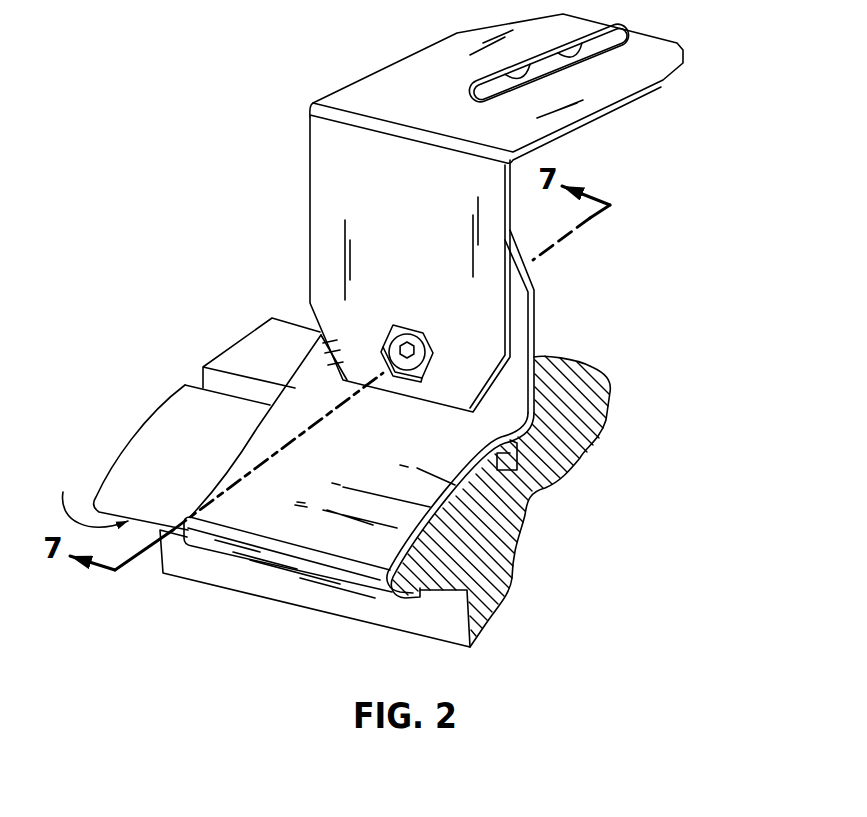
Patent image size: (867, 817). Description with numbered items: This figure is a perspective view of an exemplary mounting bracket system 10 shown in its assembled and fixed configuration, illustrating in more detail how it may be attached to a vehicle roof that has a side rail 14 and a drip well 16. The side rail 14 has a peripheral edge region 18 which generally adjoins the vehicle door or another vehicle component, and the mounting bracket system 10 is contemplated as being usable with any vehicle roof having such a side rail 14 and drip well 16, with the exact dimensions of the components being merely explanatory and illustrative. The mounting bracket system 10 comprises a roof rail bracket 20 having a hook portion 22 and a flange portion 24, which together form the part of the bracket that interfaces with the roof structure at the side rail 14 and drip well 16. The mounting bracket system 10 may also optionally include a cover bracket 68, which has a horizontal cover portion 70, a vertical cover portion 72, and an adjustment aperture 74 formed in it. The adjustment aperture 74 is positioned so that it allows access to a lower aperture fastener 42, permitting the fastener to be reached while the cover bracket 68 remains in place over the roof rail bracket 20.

The mounting bracket system 10 is at (723, 10).
The side rail 14 is at (165, 462).
The drip well 16 is at (181, 375).
The peripheral edge region 18 is at (87, 496).
The roof rail bracket 20 is at (560, 325).
The hook portion 22 is at (367, 445).
The flange portion 24 is at (520, 300).
The lower aperture fastener 42 is at (433, 367).
The cover bracket 68 is at (302, 170).
The horizontal cover portion 70 is at (406, 102).
The vertical cover portion 72 is at (394, 238).
The adjustment aperture 74 is at (386, 317).